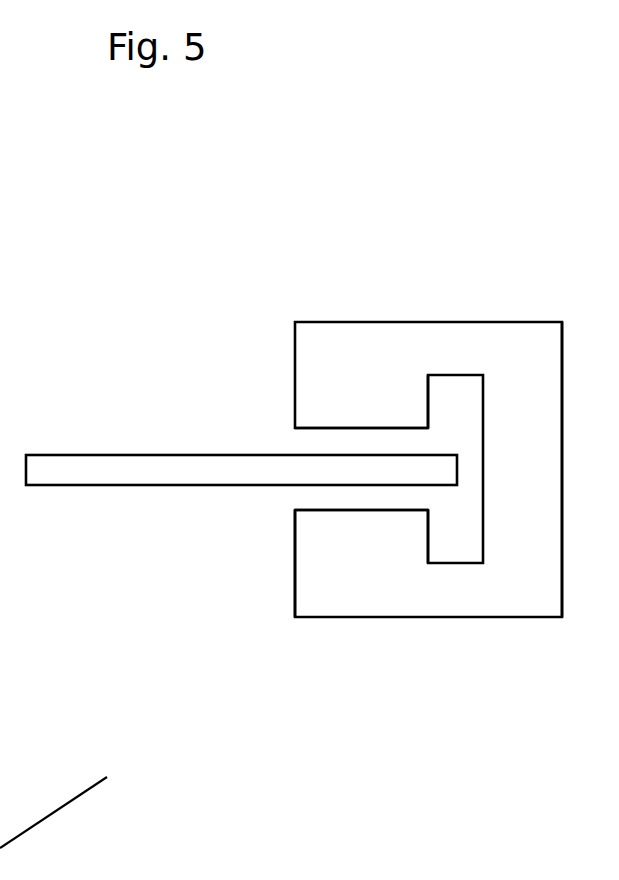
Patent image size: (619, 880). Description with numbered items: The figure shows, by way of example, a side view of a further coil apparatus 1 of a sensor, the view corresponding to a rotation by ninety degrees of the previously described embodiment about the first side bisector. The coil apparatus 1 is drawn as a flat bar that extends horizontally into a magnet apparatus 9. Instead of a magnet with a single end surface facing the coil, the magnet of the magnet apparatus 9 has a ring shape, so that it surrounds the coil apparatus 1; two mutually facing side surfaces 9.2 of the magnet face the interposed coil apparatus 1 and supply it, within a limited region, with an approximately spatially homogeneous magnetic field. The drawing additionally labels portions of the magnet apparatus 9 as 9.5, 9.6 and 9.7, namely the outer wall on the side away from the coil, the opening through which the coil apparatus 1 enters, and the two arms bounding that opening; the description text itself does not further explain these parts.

The coil apparatus 1 is at (135, 428).
The magnet apparatus 9 is at (402, 322).
The side surfaces 9.2 is at (348, 427).
The rear wall 9.5 is at (536, 643).
The insertion opening 9.6 is at (268, 536).
The clamping arms 9.7 is at (322, 402).